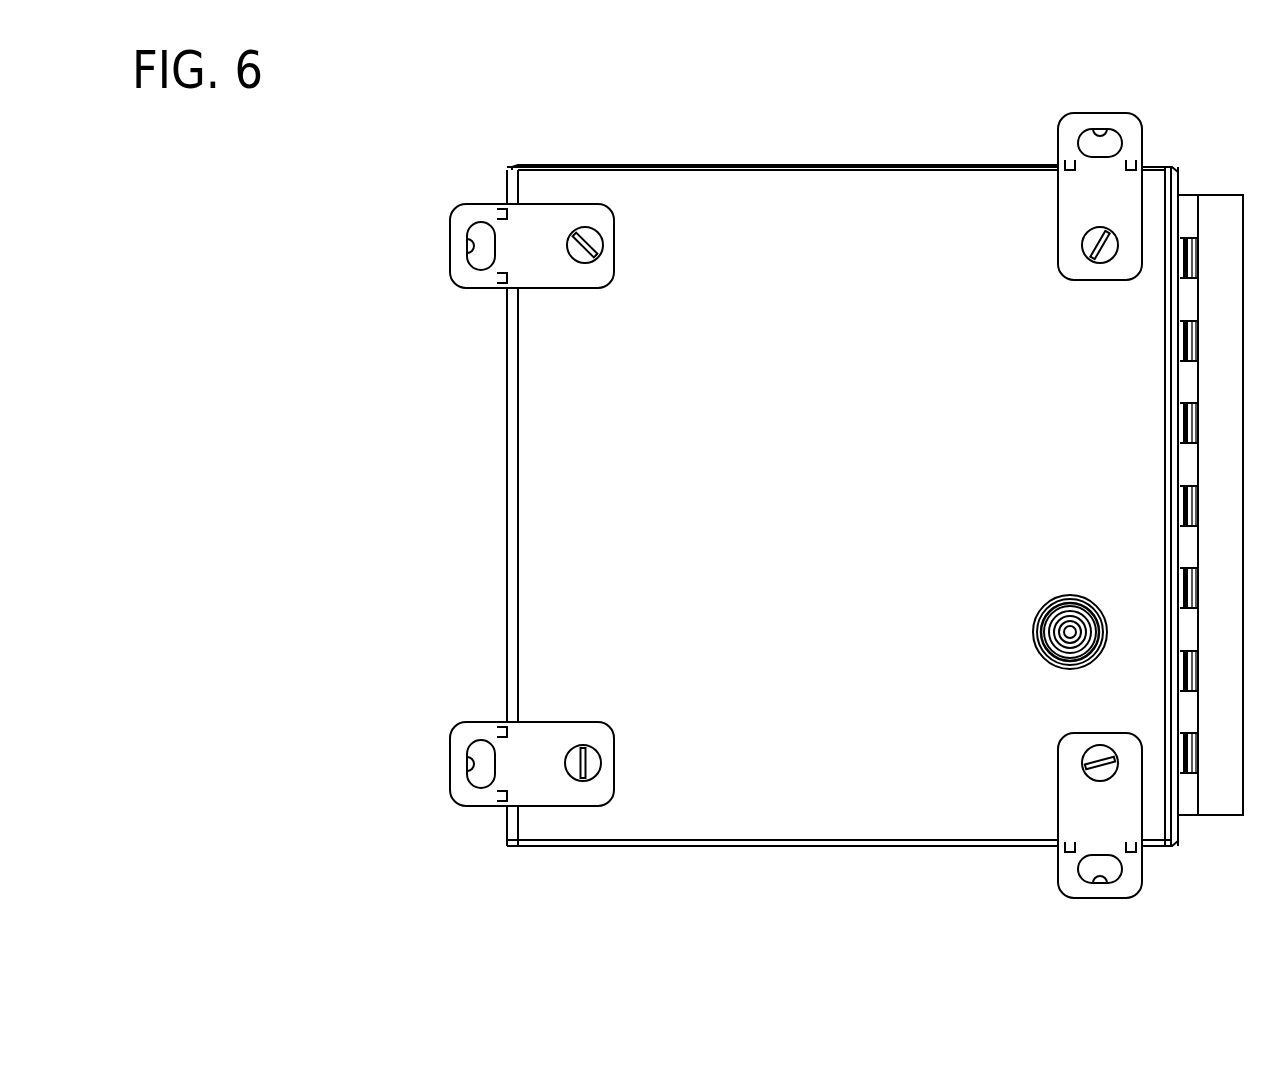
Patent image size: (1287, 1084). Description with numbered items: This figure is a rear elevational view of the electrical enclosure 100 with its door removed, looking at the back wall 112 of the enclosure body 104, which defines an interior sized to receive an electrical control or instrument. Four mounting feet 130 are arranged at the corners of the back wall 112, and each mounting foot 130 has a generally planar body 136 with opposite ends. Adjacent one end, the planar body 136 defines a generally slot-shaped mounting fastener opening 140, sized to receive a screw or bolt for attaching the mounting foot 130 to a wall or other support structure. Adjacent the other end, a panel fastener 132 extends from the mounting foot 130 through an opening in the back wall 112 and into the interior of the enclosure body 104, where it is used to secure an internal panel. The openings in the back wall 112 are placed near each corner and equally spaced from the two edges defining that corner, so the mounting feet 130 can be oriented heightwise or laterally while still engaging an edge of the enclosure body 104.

The electrical enclosure 100 is at (792, 501).
The enclosure body 104 is at (740, 165).
The back wall 112 is at (855, 517).
The mounting foot 130 is at (455, 298).
The panel fastener 132 is at (580, 234).
The planar body 136 is at (487, 205).
The mounting fastener opening 140 is at (478, 248).